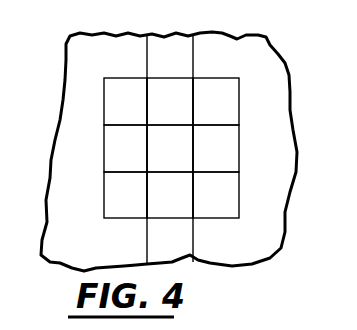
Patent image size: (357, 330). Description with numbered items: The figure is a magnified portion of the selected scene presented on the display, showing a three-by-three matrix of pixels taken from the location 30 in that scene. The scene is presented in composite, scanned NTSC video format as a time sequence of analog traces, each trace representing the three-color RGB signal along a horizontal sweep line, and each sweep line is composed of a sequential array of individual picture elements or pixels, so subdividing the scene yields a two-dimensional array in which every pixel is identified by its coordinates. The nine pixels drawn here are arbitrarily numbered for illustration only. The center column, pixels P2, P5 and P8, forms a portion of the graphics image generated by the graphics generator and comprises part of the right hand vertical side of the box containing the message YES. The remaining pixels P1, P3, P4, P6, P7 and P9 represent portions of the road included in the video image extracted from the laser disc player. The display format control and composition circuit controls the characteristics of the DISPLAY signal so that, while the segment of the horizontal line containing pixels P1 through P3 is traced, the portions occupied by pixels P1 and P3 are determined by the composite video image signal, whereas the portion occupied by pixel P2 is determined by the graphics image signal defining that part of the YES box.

The location in the scene 30 is at (245, 17).
The pixel P1 is at (125, 101).
The pixel P2 is at (170, 101).
The pixel P3 is at (216, 101).
The pixel P4 is at (125, 148).
The pixel P5 is at (170, 148).
The pixel P6 is at (216, 148).
The pixel P7 is at (125, 195).
The pixel P8 is at (170, 195).
The pixel P9 is at (216, 195).